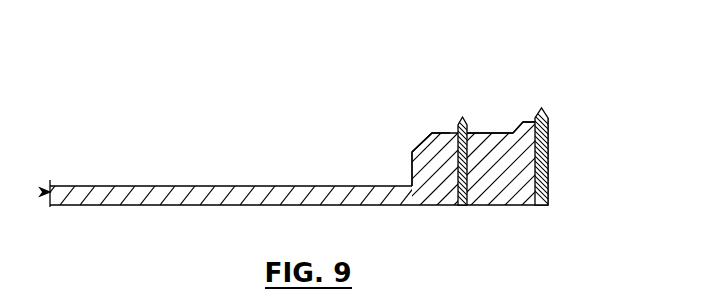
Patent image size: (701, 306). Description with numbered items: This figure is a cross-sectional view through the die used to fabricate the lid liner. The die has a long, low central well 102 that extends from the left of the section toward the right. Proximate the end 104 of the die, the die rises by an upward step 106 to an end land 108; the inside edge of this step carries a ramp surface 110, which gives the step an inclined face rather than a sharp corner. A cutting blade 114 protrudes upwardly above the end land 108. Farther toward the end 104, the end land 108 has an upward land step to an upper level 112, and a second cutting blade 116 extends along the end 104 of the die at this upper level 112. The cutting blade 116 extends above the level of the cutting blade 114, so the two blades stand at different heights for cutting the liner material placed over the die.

The central well 102 is at (198, 186).
The end 104 is at (550, 181).
The upward step 106 is at (412, 167).
The end land 108 is at (490, 133).
The ramp surface 110 is at (420, 145).
The upper level 112 is at (530, 122).
The cutting blade 114 is at (456, 128).
The cutting blade 116 is at (548, 140).